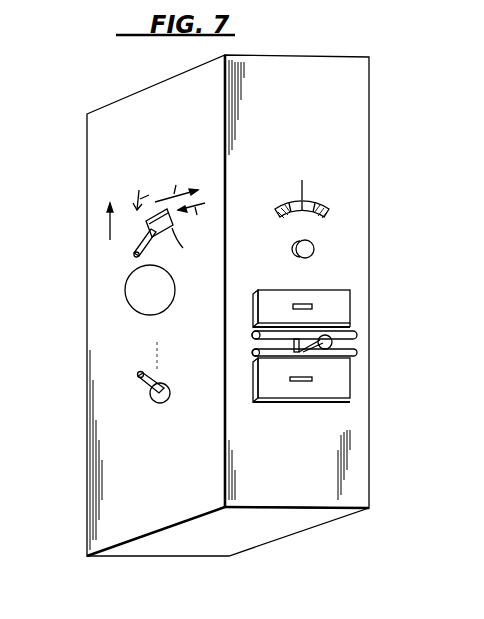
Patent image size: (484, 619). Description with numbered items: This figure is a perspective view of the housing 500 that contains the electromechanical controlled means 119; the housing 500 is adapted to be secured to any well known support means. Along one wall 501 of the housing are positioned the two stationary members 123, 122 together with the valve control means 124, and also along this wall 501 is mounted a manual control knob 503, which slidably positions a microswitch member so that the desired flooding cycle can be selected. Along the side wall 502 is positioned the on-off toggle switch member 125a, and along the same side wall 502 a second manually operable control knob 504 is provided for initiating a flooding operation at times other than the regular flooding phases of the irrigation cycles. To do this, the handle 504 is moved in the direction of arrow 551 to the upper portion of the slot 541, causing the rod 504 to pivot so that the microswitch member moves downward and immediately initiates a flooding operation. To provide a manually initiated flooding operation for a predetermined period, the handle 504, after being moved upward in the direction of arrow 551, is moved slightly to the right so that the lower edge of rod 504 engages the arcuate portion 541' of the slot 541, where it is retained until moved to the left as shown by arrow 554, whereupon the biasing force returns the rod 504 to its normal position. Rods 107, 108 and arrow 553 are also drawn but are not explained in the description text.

The housing 500 is at (82, 325).
The wall 501 is at (312, 114).
The side wall 502 is at (168, 130).
The manual control knob 503 is at (315, 249).
The manually operable control knob 504 is at (136, 251).
The slot 541 is at (132, 190).
The arcuate portion of slot 541' is at (198, 245).
The arrow 551 is at (108, 222).
The direction arrow 553 is at (178, 181).
The arrow 554 is at (199, 221).
The upper rod 107 is at (366, 302).
The lower rod 108 is at (357, 352).
The electromechanical controlled means 119 is at (60, 463).
The stationary member 122 is at (345, 386).
The stationary member 123 is at (310, 290).
The valve control means 124 is at (322, 307).
The on-off toggle switch member 125a is at (165, 405).